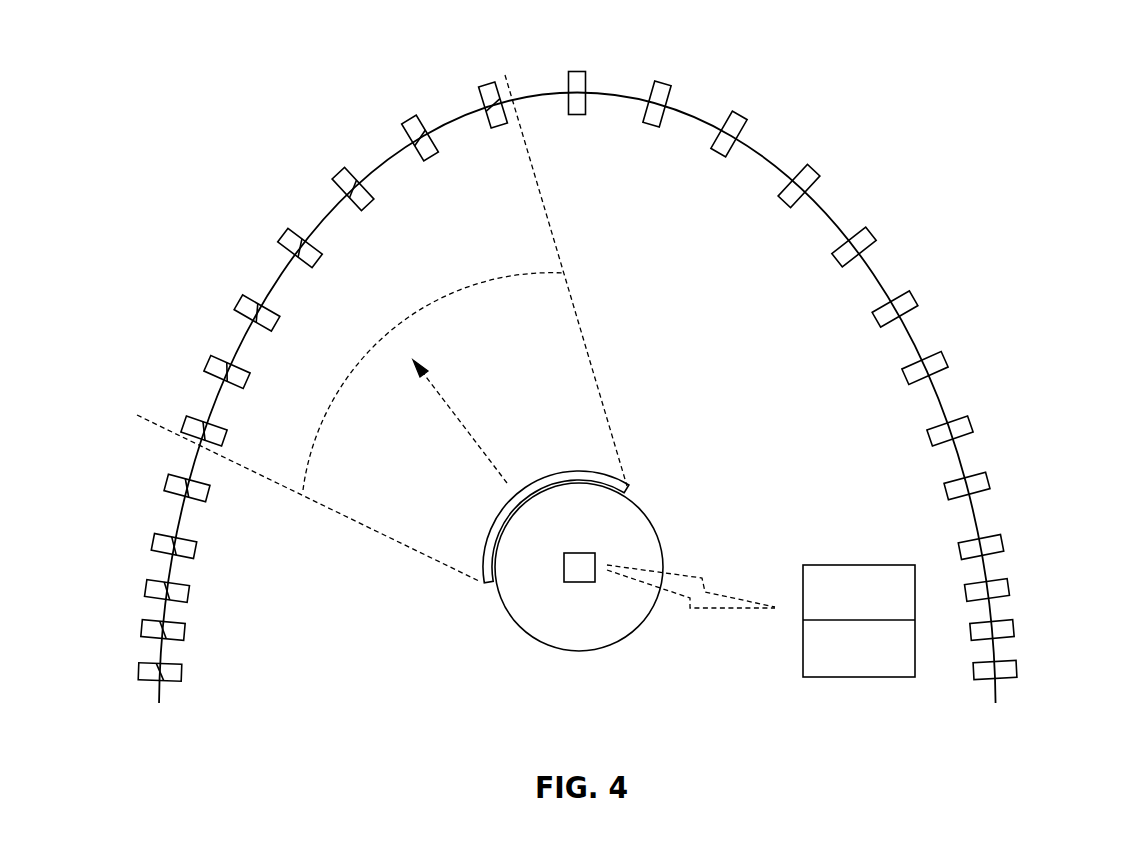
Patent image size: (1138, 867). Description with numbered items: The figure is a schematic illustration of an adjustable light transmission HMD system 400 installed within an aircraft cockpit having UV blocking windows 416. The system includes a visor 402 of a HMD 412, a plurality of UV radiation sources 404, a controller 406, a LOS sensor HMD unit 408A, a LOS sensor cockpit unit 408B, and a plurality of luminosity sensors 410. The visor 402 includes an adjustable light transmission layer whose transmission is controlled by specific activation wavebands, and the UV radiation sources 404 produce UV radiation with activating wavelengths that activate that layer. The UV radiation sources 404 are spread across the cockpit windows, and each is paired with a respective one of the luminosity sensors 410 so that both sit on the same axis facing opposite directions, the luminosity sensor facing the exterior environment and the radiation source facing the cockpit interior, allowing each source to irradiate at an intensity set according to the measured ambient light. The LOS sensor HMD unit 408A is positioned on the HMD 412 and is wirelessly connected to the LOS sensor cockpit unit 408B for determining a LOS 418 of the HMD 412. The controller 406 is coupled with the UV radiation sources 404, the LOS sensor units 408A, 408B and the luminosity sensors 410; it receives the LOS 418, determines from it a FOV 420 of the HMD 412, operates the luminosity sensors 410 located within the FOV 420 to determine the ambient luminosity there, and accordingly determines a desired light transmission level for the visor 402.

The adjustable light transmission HMD system 400 is at (300, 92).
The visor 402 is at (490, 580).
The UV radiation sources 404 is at (648, 123).
The controller 406 is at (858, 677).
The LOS sensor HMD unit 408A is at (587, 552).
The LOS sensor cockpit unit 408B is at (858, 565).
The luminosity sensors 410 is at (915, 300).
The HMD 412 is at (580, 653).
The UV blocking windows 416 is at (827, 210).
The LOS 418 is at (463, 428).
The FOV 420 is at (385, 538).